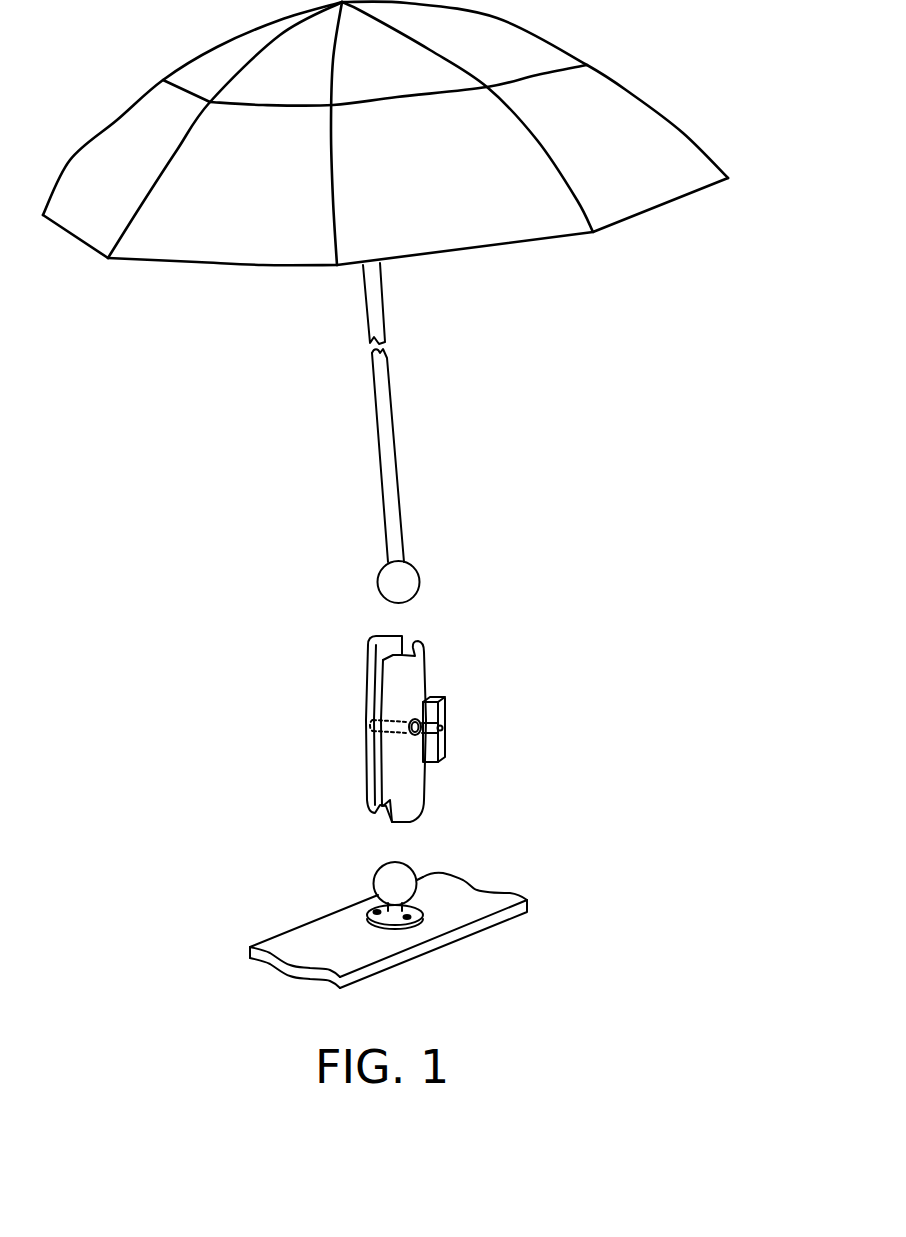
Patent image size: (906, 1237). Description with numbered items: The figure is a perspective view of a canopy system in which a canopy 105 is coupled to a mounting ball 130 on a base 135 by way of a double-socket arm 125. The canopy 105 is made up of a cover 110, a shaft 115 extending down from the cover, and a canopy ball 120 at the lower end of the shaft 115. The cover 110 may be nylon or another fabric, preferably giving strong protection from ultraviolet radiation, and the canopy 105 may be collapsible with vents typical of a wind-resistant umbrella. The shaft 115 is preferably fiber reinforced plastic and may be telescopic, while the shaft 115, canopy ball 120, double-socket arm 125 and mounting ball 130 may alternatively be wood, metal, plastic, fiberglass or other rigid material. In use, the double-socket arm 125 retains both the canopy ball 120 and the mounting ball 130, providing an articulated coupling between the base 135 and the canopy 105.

The canopy 105 is at (630, 324).
The cover 110 is at (620, 105).
The shaft 115 is at (384, 378).
The canopy ball 120 is at (407, 587).
The double-socket arm 125 is at (507, 743).
The mounting ball 130 is at (387, 880).
The base 135 is at (318, 947).